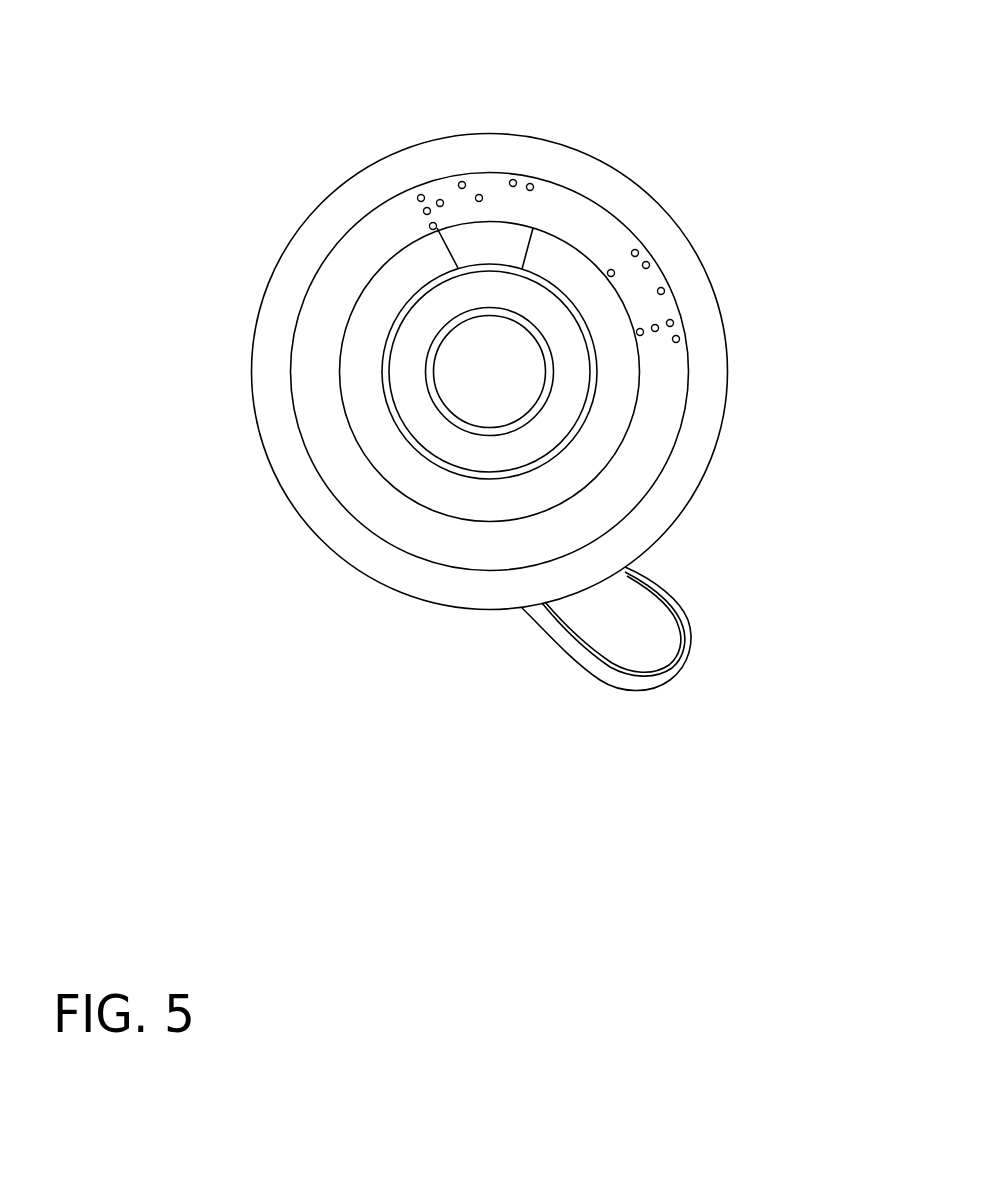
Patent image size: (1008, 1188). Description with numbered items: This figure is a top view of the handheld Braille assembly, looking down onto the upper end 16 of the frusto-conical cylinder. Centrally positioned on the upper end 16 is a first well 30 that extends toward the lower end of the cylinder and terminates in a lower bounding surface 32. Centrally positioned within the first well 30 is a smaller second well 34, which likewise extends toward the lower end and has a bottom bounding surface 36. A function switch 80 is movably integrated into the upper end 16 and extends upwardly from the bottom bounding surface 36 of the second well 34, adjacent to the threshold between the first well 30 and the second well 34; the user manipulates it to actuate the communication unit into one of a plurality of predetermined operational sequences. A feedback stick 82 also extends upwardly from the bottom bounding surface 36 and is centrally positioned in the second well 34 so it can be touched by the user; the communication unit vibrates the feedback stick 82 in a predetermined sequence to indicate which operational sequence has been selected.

The upper end 16 is at (364, 170).
The first well 30 is at (652, 437).
The lower bounding surface 32 is at (659, 389).
The second well 34 is at (345, 365).
The bottom bounding surface 36 is at (427, 477).
The function switch 80 is at (512, 237).
The feedback stick 82 is at (498, 427).